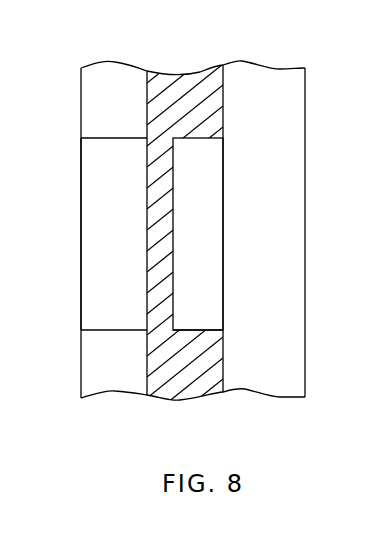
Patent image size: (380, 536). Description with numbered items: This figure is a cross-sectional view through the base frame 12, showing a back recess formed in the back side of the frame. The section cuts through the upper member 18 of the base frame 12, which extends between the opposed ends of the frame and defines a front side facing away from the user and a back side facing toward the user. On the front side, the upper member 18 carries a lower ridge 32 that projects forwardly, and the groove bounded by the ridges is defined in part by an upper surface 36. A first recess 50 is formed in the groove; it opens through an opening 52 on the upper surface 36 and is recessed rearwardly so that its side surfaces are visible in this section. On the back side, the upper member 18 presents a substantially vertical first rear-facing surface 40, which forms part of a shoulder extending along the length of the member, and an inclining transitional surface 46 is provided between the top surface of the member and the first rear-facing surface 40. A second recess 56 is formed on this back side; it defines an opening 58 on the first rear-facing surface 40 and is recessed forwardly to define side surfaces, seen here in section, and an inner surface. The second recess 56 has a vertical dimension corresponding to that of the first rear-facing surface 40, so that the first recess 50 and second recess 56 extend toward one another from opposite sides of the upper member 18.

The base frame 12 is at (343, 96).
The upper member 18 is at (177, 77).
The lower ridge 32 is at (189, 400).
The upper surface of the groove 36 is at (96, 96).
The first rear-facing surface 40 is at (223, 362).
The inclining transitional surface 46 is at (293, 164).
The first recess 50 is at (126, 253).
The opening of the first recess 52 is at (90, 285).
The second recess 56 is at (207, 248).
The opening of the second recess 58 is at (223, 200).